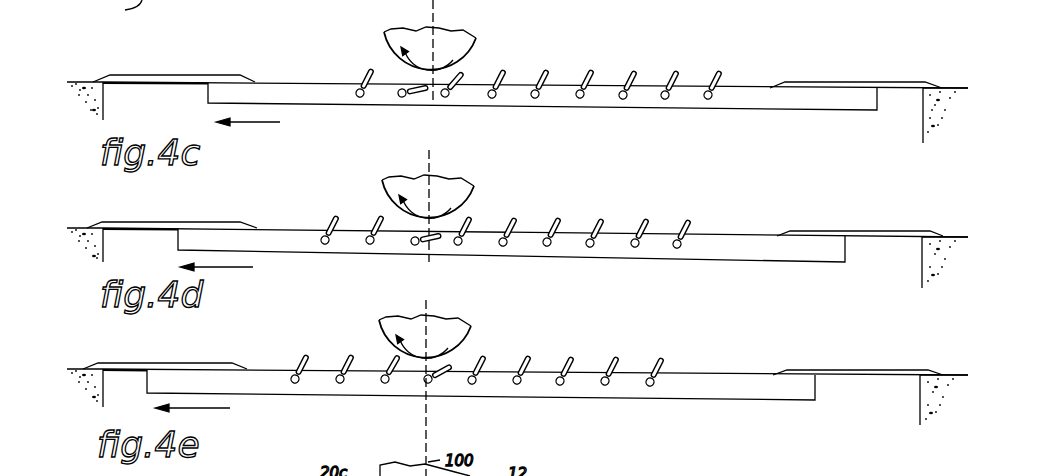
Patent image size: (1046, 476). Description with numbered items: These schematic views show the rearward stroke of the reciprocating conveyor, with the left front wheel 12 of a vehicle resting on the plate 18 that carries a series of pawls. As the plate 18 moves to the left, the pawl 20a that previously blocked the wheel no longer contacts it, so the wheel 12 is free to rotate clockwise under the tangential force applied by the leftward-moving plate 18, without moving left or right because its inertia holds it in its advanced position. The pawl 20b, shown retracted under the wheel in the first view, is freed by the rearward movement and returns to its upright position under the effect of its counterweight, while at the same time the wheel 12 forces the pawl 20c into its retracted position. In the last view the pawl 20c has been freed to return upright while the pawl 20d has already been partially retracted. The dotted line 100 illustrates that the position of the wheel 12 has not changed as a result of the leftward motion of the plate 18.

In FIG. 4C, the left front wheel 12 is at (475, 46).
In FIG. 4D, the left front wheel 12 is at (473, 200).
In FIG. 4E, the left front wheel 12 is at (468, 346).
In FIG. 4C, the plate 18 is at (593, 101).
In FIG. 4D, the plate 18 is at (571, 251).
In FIG. 4E, the plate 18 is at (592, 394).
In FIG. 4C, the pawl 20a is at (362, 80).
In FIG. 4C, the pawl 20b is at (424, 90).
In FIG. 4D, the pawl 20b is at (377, 222).
In FIG. 4C, the pawl 20c is at (462, 94).
In FIG. 4D, the pawl 20c is at (436, 242).
In FIG. 4E, the pawl 20c is at (396, 382).
In FIG. 4E, the pawl 20d is at (440, 383).
In FIG. 4C, the dotted line 100 is at (434, 8).
In FIG. 4D, the dotted line 100 is at (430, 162).
In FIG. 4E, the dotted line 100 is at (427, 314).